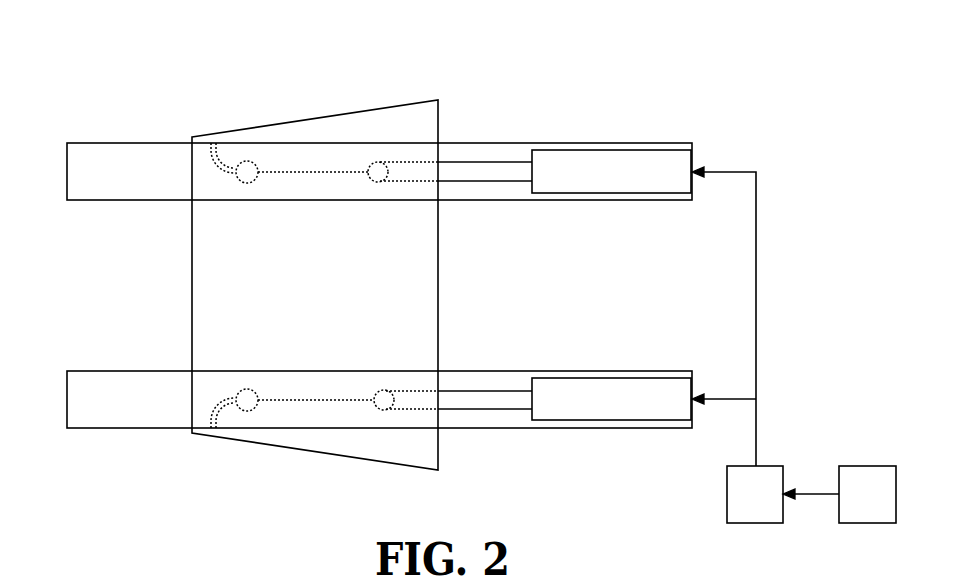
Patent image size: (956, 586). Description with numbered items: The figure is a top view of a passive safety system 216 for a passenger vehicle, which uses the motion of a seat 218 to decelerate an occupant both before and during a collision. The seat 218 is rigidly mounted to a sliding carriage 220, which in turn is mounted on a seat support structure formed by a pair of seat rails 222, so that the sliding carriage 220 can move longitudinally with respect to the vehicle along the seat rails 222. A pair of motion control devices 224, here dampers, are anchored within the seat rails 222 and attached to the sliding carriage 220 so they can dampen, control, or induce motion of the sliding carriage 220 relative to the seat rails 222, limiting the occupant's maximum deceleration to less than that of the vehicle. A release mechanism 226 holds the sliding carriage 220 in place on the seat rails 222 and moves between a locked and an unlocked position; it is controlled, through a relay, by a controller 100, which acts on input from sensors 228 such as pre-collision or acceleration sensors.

The passive safety system 216 is at (80, 44).
The seat 218 is at (258, 127).
The sliding carriage 220 is at (333, 173).
The seat rails 222 is at (145, 143).
The motion control devices 224 is at (612, 150).
The release mechanism 226 is at (227, 178).
The controller 100 is at (737, 345).
The sensors 228 is at (839, 494).